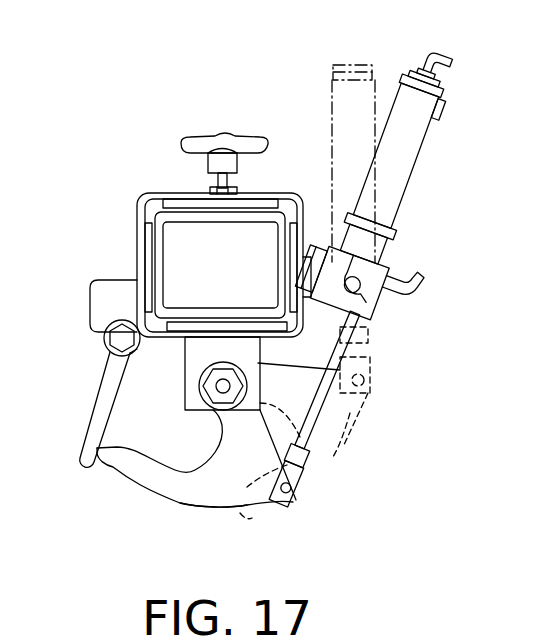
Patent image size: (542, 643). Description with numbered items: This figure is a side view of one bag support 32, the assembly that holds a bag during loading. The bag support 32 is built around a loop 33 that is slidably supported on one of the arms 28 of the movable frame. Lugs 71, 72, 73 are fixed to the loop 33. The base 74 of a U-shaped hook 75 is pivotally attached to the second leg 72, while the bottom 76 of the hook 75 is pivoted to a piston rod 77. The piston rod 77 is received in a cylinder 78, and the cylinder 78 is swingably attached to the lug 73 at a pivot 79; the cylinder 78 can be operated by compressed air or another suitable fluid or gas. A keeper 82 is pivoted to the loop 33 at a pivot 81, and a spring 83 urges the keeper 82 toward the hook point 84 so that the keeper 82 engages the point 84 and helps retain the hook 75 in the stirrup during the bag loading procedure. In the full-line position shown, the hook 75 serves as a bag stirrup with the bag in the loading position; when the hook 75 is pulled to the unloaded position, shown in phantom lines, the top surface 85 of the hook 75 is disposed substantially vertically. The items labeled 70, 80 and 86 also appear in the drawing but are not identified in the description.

The arm 28 is at (167, 266).
The bag support 32 is at (393, 265).
The loop 33 is at (137, 215).
The knob 70 is at (258, 136).
The lug 71 is at (93, 300).
The second leg 72 is at (190, 368).
The lug 73 is at (237, 190).
The base of hook 74 is at (215, 412).
The hook 75 is at (362, 417).
The bottom of hook 76 is at (200, 508).
The piston rod 77 is at (318, 432).
The cylinder 78 is at (343, 106).
The pivot of cylinder 79 is at (375, 302).
The clamp assembly 80 is at (138, 167).
The pivot of keeper 81 is at (122, 338).
The keeper 82 is at (90, 432).
The spring 83 is at (130, 352).
The hook point 84 is at (100, 460).
The top surface of hook 85 is at (165, 457).
The fitting 86 is at (416, 292).